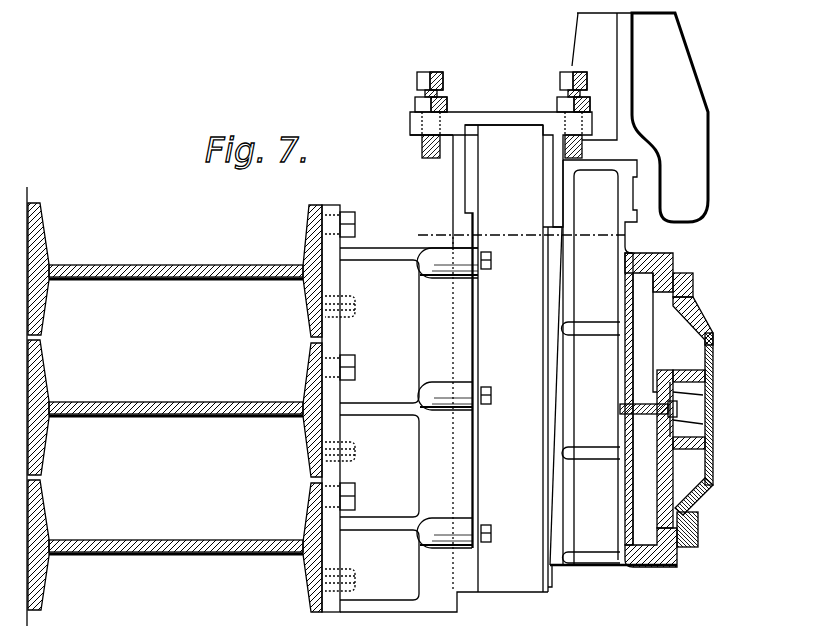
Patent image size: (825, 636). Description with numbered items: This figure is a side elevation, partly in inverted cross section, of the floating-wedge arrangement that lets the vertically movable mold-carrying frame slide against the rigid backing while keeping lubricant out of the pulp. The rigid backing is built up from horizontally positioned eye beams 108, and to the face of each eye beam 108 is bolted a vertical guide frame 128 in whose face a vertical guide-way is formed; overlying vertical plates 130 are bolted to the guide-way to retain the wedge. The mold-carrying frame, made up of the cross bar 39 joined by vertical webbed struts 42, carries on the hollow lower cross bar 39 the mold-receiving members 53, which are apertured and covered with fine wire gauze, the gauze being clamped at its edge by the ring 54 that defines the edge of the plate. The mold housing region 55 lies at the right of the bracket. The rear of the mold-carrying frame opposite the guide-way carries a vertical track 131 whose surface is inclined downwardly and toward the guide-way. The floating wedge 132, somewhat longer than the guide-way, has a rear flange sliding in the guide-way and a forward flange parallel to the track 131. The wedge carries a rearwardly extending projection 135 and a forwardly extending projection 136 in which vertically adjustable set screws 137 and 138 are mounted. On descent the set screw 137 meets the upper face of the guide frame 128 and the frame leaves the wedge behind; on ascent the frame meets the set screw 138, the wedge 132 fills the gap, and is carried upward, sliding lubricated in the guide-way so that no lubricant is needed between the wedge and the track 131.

The eye beams 108 is at (214, 281).
The vertical guide frame 128 is at (402, 413).
The overlying vertical plates 130 is at (473, 259).
The vertical track 131 is at (556, 560).
The floating wedge 132 is at (516, 568).
The rearwardly extending projection 135 is at (412, 121).
The forwardly extending projection 136 is at (586, 119).
The set screw 137 is at (431, 60).
The set screw 138 is at (560, 77).
The vertical webbed struts 42 is at (702, 146).
The cross bar 39 is at (637, 241).
The housing 55 is at (713, 447).
The mold-receiving members 53 is at (702, 490).
The ring 54 is at (762, 538).